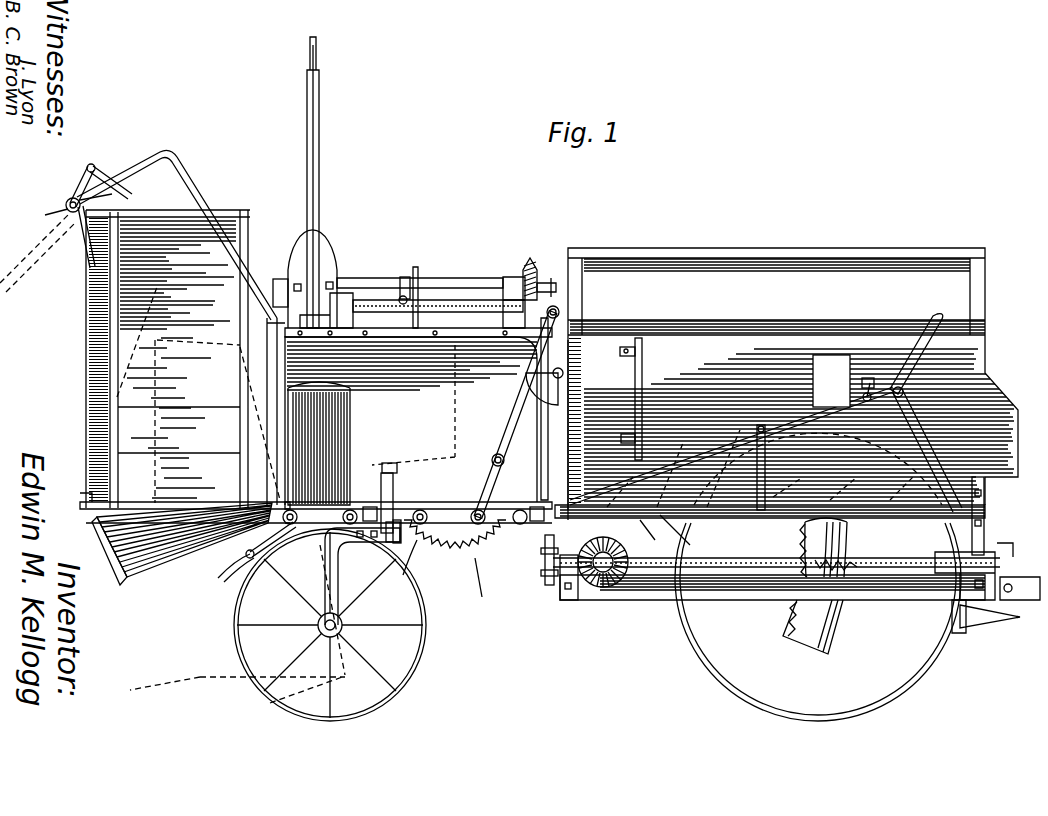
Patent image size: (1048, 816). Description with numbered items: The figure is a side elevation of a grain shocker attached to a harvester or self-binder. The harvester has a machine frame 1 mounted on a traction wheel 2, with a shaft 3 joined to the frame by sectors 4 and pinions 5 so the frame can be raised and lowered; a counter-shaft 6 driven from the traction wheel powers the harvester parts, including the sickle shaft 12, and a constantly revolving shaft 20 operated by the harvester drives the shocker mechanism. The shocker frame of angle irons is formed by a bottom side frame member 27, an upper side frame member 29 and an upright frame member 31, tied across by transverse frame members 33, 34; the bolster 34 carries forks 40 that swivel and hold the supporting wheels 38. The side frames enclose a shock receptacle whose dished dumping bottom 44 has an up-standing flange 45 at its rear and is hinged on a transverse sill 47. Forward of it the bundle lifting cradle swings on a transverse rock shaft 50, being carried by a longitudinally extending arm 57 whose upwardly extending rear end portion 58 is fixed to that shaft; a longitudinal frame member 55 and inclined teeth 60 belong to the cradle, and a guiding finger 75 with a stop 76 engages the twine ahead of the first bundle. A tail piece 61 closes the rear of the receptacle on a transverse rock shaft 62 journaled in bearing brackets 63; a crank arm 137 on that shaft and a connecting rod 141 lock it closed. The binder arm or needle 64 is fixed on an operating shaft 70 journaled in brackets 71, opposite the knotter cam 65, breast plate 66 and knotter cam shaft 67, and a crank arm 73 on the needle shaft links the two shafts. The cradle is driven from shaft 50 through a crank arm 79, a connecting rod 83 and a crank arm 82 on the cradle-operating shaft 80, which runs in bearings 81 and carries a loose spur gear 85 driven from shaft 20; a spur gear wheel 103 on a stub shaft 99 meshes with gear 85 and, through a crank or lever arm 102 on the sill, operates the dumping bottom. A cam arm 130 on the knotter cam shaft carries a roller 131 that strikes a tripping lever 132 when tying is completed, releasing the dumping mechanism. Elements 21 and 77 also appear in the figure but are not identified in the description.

The machine frame 1 is at (736, 598).
The traction wheel 2 is at (728, 672).
The shaft 3 is at (800, 563).
The sectors 4 is at (835, 628).
The pinions 5 is at (838, 560).
The counter-shaft 6 is at (597, 586).
The sickle shaft 12 is at (660, 573).
The constantly revolving shaft 20 is at (520, 510).
The pin 21 is at (392, 462).
The bottom side frame member 27 is at (86, 505).
The upper side frame member 29 is at (418, 416).
The upright frame member 31 is at (203, 177).
The transverse frame member 33 is at (540, 552).
The transverse frame member or bolster 34 is at (380, 490).
The supporting wheels 38 is at (424, 608).
The forks 40 is at (338, 586).
The dumping bottom 44 is at (185, 560).
The up-standing flange 45 is at (100, 540).
The transverse sill 47 is at (248, 548).
The transverse rock shaft 50 is at (565, 372).
The longitudinal frame member 55 is at (818, 405).
The longitudinally extending arm 57 is at (920, 515).
The upwardly extending rear end portion 58 is at (562, 425).
The teeth 60 is at (668, 520).
The tail piece 61 is at (82, 240).
The transverse rock shaft 62 is at (70, 200).
The bearing brackets 63 is at (112, 197).
The shock binder arm or needle 64 is at (320, 140).
The knotter cam 65 is at (282, 278).
The breast plate 66 is at (325, 248).
The knotter cam shaft 67 is at (462, 278).
The supporting and operating shaft 70 is at (438, 314).
The bearings or brackets 71 is at (345, 292).
The crank arm 73 is at (545, 280).
The guiding finger 75 is at (918, 345).
The stop 76 is at (866, 378).
The lever handle 77 is at (319, 162).
The crank arm 79 is at (560, 338).
The cradle-operating shaft 80 is at (472, 545).
The bearings 81 is at (462, 538).
The crank arm 82 is at (490, 470).
The connecting rod 83 is at (517, 412).
The spur gear 85 is at (486, 587).
The stub shaft 99 is at (419, 510).
The crank or lever arm 102 is at (240, 562).
The spur gear wheel 103 is at (418, 545).
The cam arm 130 is at (400, 296).
The roller 131 is at (420, 297).
The tripping lever 132 is at (410, 277).
The crank arm 137 is at (88, 166).
The pitman or connecting rod 141 is at (108, 182).